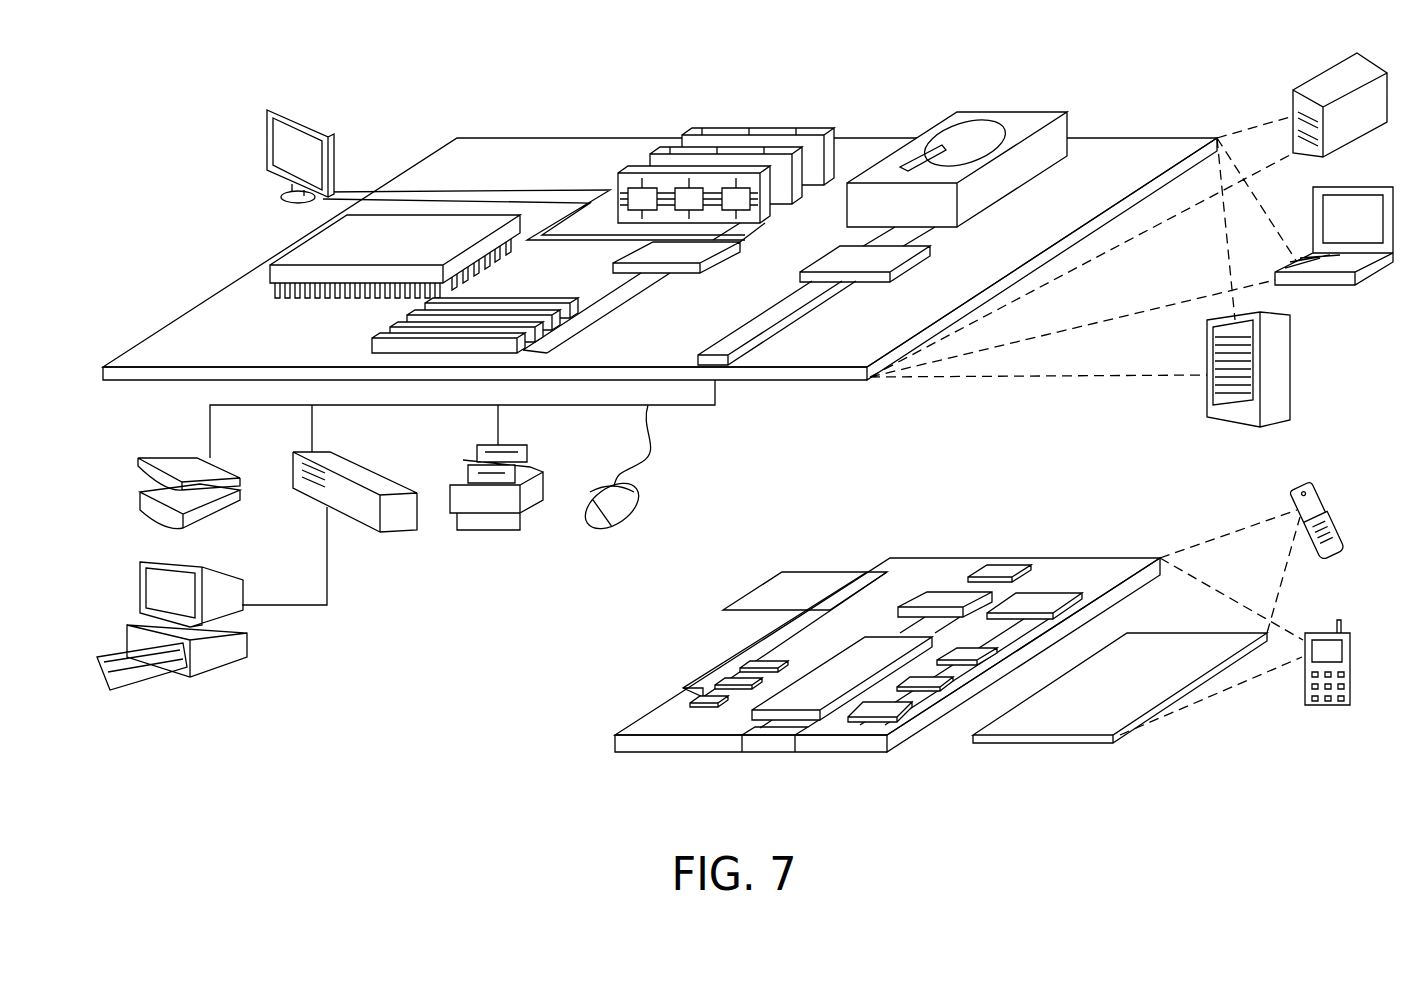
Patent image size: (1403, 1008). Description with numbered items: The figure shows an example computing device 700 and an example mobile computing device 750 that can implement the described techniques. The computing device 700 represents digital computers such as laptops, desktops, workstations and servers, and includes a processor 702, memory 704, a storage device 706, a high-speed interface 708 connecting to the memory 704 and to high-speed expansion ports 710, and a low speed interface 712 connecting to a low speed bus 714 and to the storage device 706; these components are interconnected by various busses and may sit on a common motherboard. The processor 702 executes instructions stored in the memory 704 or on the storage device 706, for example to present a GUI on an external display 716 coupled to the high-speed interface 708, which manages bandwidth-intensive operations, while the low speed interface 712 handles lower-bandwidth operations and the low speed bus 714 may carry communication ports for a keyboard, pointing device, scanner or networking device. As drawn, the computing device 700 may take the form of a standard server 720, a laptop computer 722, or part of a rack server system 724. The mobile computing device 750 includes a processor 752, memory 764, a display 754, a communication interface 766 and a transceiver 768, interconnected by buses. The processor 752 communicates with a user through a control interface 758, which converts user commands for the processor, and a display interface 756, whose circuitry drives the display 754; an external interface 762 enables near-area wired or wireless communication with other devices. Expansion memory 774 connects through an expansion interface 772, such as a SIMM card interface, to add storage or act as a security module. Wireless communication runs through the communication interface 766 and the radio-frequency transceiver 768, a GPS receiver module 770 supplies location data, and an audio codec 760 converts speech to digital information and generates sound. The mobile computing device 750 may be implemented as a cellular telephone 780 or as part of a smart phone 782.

The computing device 700 is at (398, 87).
The processor 702 is at (300, 246).
The memory 704 is at (760, 132).
The storage device 706 is at (995, 112).
The high-speed interface 708 is at (689, 272).
The high-speed expansion ports 710 is at (400, 324).
The low speed interface 712 is at (838, 256).
The low speed bus 714 is at (720, 355).
The display 716 is at (273, 108).
The standard server 720 is at (1312, 80).
The laptop computer 722 is at (1371, 186).
The rack server system 724 is at (1300, 372).
The computing device 750 is at (574, 755).
The processor 752 is at (813, 690).
The display 754 is at (1160, 650).
The display interface 756 is at (897, 710).
The control interface 758 is at (940, 680).
The audio codec 760 is at (970, 650).
The external interface 762 is at (770, 746).
The memory 764 is at (720, 688).
The communication interface 766 is at (946, 593).
The transceiver 768 is at (1043, 600).
The GPS receiver module 770 is at (1003, 574).
The expansion interface 772 is at (867, 572).
The expansion memory 774 is at (781, 572).
The cellular telephone 780 is at (1305, 478).
The smart phone 782 is at (1322, 633).